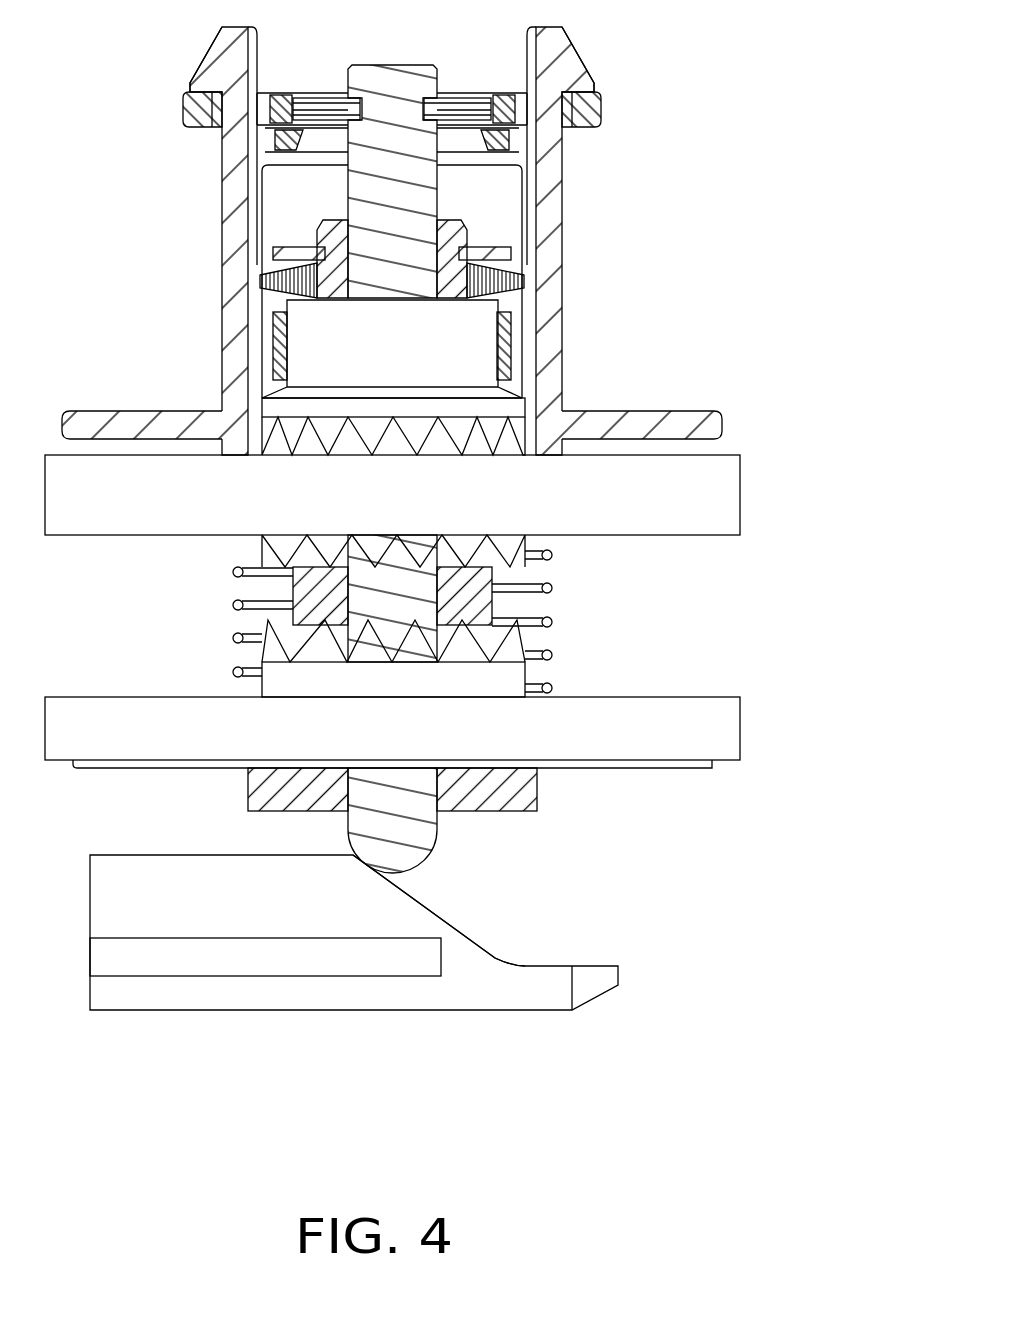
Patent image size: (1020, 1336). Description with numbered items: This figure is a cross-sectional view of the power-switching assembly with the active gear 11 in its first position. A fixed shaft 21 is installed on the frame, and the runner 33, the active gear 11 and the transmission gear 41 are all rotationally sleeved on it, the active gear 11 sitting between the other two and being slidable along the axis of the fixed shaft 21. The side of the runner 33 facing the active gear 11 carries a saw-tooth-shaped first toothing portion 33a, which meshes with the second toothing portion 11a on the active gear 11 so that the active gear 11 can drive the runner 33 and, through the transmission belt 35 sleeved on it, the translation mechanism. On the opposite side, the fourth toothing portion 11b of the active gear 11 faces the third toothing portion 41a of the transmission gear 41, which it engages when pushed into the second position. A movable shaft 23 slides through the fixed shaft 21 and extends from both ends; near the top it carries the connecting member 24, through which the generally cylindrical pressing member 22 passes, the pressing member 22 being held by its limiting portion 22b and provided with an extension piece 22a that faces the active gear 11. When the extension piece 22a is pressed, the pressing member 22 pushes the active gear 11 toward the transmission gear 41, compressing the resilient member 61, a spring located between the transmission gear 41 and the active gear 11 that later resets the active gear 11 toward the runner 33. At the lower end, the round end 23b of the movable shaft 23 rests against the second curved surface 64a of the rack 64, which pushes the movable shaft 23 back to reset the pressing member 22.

The active gear 11 is at (715, 515).
The second toothing portion 11a is at (438, 440).
The fourth toothing portion 11b is at (475, 545).
The fixed shaft 21 is at (312, 615).
The pressing member 22 is at (548, 262).
The extension piece 22a is at (695, 425).
The limiting portion 22b is at (562, 70).
The movable shaft 23 is at (388, 88).
The round end 23b is at (421, 864).
The connecting member 24 is at (195, 110).
The runner 33 is at (305, 337).
The first toothing portion 33a is at (298, 415).
The transmission belt 35 is at (505, 343).
The transmission gear 41 is at (712, 745).
The third toothing portion 41a is at (515, 675).
The resilient member 61 is at (238, 668).
The rack 64 is at (460, 995).
The second curved surface 64a is at (477, 941).